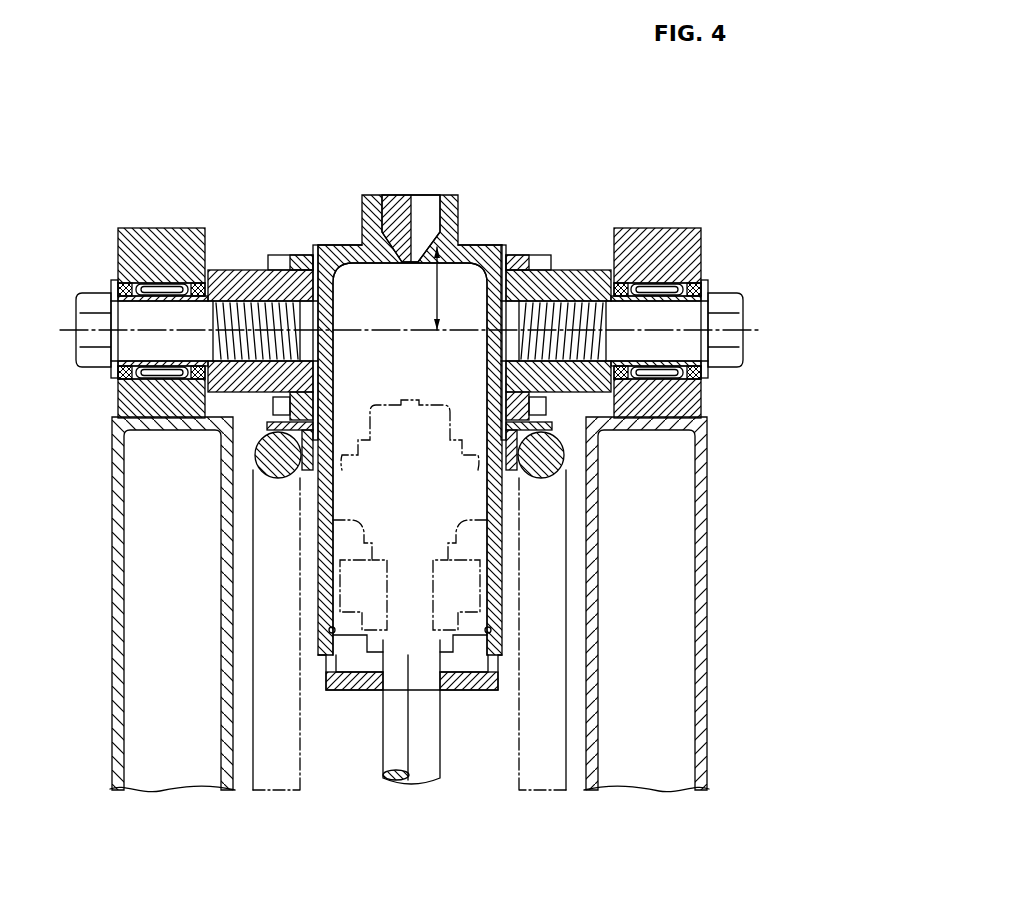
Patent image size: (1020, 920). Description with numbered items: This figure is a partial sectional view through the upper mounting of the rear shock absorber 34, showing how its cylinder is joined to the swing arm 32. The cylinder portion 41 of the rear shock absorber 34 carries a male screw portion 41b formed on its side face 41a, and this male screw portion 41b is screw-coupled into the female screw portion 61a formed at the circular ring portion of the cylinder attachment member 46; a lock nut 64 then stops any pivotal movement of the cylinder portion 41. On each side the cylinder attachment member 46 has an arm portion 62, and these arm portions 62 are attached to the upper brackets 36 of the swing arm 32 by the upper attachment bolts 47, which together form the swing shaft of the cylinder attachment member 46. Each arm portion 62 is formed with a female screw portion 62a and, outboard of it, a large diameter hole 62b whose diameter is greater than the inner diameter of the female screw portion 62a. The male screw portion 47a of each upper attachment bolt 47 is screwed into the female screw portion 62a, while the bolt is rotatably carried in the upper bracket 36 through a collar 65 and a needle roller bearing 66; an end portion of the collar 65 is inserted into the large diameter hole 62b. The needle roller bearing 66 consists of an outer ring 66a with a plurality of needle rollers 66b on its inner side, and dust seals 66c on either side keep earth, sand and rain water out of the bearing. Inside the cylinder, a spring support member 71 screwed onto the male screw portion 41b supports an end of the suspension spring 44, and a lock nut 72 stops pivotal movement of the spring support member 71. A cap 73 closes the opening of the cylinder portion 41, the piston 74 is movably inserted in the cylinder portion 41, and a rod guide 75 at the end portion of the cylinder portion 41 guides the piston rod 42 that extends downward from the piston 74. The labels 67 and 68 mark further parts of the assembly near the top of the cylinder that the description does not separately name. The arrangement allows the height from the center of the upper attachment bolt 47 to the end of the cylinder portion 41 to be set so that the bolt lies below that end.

The swing arm 32 is at (178, 790).
The rear shock absorber 34 is at (316, 245).
The upper bracket 36 is at (120, 228).
The cylinder portion 41 is at (312, 613).
The side face 41a is at (312, 533).
The male screw portion 41b is at (288, 255).
The piston rod 42 is at (440, 750).
The suspension spring 44 is at (545, 457).
The cylinder attachment member 46 is at (562, 268).
The upper attachment bolt 47 is at (78, 318).
The male screw portion 47a is at (243, 300).
The female screw portion 61a is at (492, 263).
The arm portion 62 is at (232, 270).
The female screw portion 62a is at (245, 430).
The large diameter hole 62b is at (125, 355).
The lock nut 64 is at (535, 268).
The collar 65 is at (220, 298).
The needle roller bearing 66 is at (150, 228).
The outer ring 66a is at (112, 230).
The needle roller 66b is at (118, 266).
The dust seal 66c is at (118, 290).
The shoulder 67 is at (355, 245).
The plug 68 is at (403, 195).
The spring support member 71 is at (333, 435).
The lock nut 72 is at (333, 385).
The cap 73 is at (368, 692).
The piston 74 is at (312, 470).
The rod guide 75 is at (440, 630).